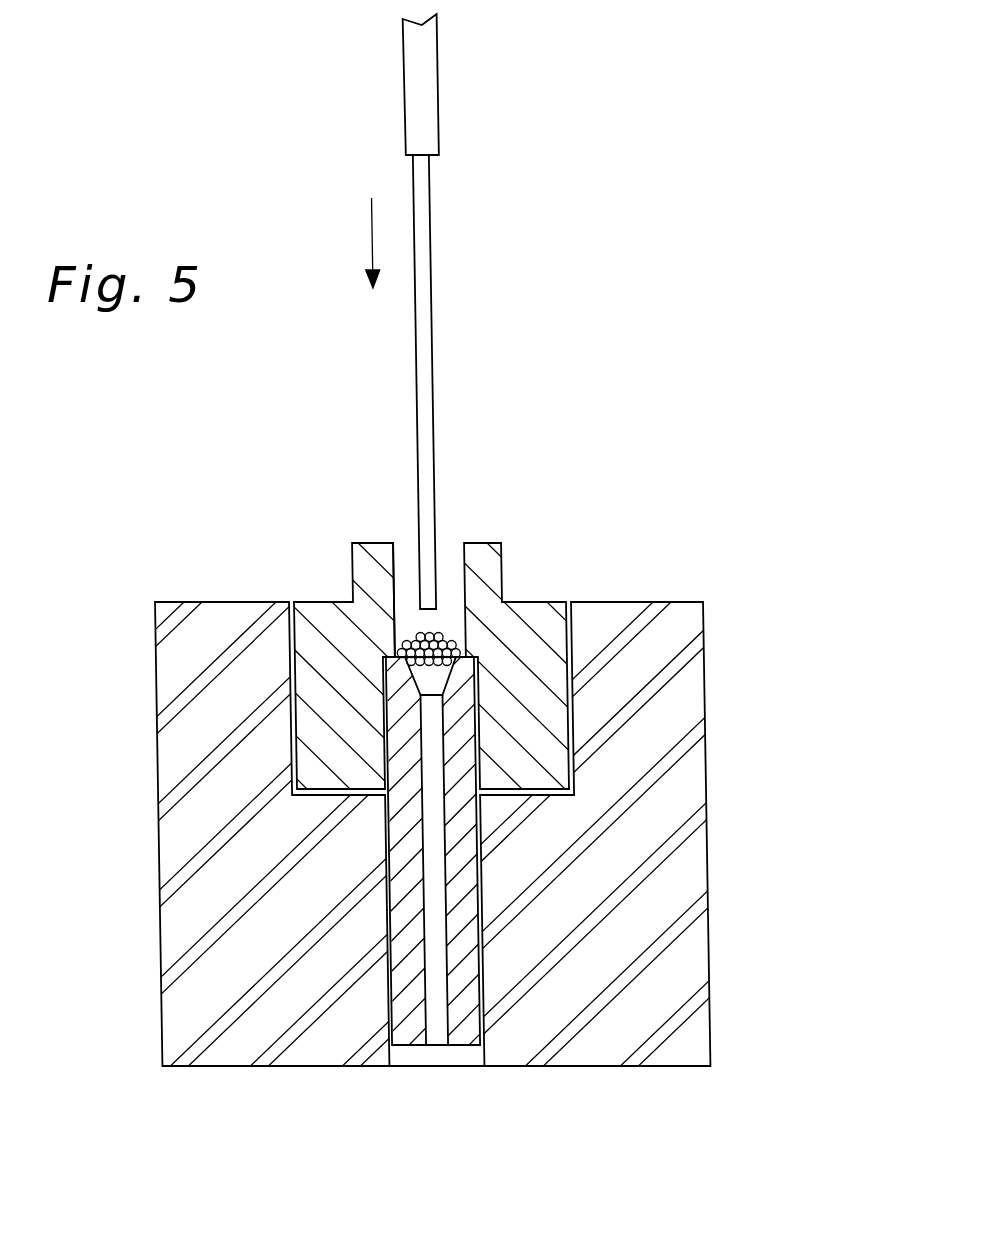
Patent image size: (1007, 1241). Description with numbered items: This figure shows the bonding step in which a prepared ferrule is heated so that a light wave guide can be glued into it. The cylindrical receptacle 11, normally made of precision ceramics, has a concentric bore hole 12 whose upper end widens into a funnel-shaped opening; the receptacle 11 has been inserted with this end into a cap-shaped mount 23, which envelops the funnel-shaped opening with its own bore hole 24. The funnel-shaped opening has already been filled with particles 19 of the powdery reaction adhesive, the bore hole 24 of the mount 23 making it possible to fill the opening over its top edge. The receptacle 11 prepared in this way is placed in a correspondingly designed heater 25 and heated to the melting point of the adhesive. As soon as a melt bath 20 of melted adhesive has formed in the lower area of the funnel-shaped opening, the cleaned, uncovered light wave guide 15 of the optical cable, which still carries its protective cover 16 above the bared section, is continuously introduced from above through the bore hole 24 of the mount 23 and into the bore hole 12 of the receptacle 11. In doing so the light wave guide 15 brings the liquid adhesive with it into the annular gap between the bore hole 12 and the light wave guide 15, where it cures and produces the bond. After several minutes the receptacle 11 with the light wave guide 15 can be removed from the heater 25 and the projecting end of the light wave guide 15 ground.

The receptacle 11 is at (457, 987).
The bore hole 12 is at (429, 853).
The light wave guide 15 is at (430, 270).
The cover 16 is at (431, 92).
The particles 19 is at (449, 640).
The melt bath 20 is at (437, 681).
The mount 23 is at (319, 613).
The bore hole 24 is at (400, 582).
The heater 25 is at (174, 840).